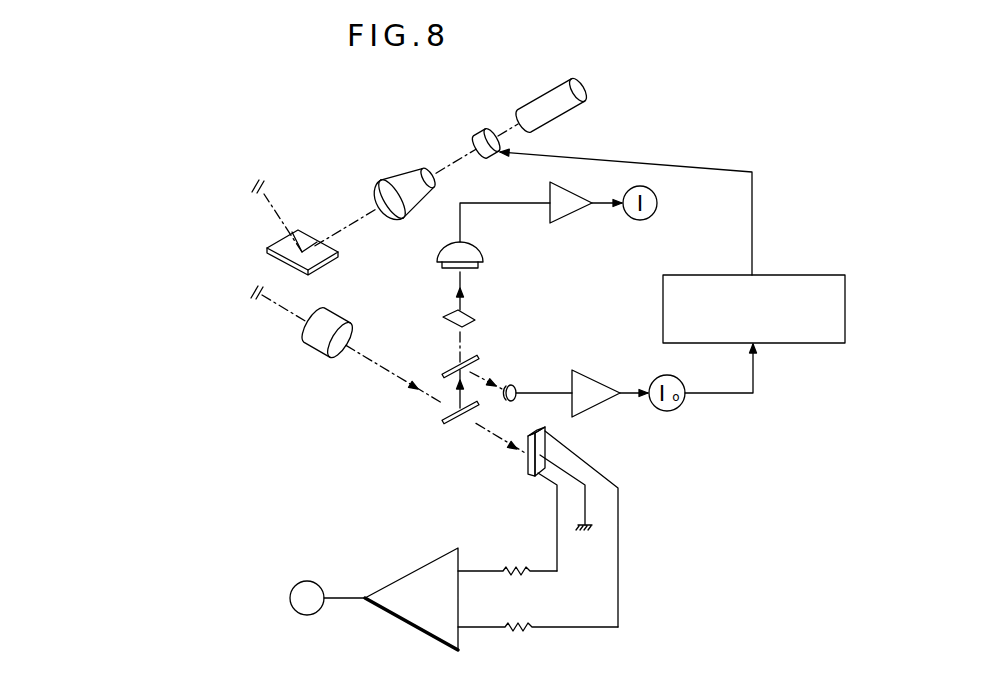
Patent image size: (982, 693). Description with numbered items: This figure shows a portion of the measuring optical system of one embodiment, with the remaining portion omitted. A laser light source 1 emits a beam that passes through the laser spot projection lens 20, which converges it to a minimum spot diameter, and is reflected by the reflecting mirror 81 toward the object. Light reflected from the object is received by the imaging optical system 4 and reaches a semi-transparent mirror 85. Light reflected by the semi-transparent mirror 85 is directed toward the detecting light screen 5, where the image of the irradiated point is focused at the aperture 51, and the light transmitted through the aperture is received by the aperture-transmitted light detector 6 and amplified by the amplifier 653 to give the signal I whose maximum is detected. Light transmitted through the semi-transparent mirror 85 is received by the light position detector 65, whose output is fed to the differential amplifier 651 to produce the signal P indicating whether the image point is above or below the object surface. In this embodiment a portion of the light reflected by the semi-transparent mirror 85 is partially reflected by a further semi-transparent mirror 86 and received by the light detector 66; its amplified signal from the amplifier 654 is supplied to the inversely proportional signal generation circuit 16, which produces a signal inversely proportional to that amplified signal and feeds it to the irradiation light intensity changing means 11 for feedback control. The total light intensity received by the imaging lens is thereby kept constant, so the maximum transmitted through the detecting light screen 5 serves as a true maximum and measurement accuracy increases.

The laser light source 1 is at (543, 92).
The irradiation light intensity changing means 11 is at (477, 131).
The laser spot projection lens 20 is at (397, 171).
The reflecting mirror 81 is at (340, 253).
The imaging optical system 4 is at (316, 355).
The semi-transparent mirror 85 is at (454, 426).
The semi-transparent mirror 86 is at (482, 360).
The aperture 51 is at (443, 316).
The detecting light screen 5 is at (472, 310).
The aperture-transmitted light detector 6 is at (485, 253).
The light detector 66 is at (514, 384).
The light position detector 65 is at (528, 464).
The amplifier 653 is at (574, 213).
The amplifier 654 is at (600, 404).
The inversely proportional signal generation circuit 16 is at (779, 274).
The differential amplifier 651 is at (396, 624).